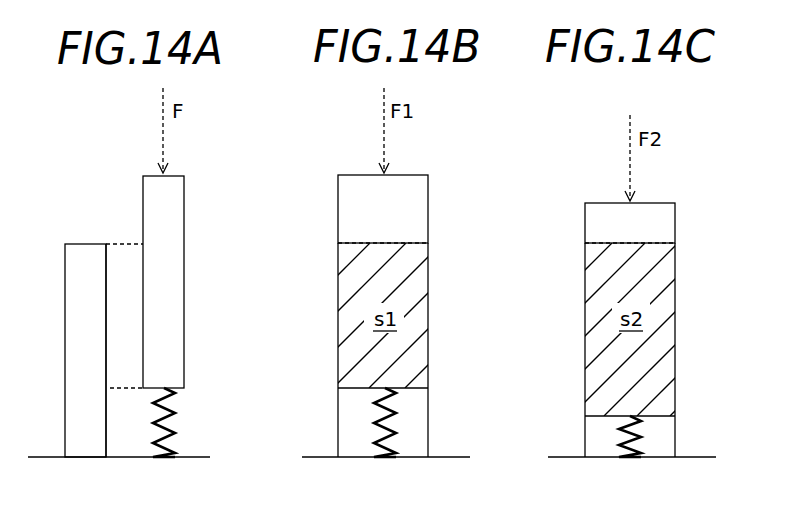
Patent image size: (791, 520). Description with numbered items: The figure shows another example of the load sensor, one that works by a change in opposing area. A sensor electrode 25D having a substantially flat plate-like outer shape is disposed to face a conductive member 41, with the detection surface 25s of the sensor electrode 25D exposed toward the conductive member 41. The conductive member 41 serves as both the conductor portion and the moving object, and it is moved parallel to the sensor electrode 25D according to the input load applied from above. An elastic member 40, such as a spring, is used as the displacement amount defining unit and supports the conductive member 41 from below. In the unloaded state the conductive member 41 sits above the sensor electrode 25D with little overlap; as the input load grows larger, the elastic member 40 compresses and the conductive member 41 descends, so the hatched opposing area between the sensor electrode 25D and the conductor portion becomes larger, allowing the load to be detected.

In FIG. 14A, the sensor electrode 25D is at (65, 244).
In FIG. 14B, the sensor electrode 25D is at (338, 420).
In FIG. 14C, the sensor electrode 25D is at (585, 432).
In FIG. 14A, the detection surface 25s is at (108, 296).
In FIG. 14B, the detection surface 25s is at (428, 409).
In FIG. 14C, the detection surface 25s is at (675, 425).
In FIG. 14A, the conductive member 41 is at (184, 176).
In FIG. 14B, the conductive member 41 is at (428, 175).
In FIG. 14C, the conductive member 41 is at (675, 203).
In FIG. 14A, the elastic member 40 is at (180, 436).
In FIG. 14B, the elastic member 40 is at (400, 436).
In FIG. 14C, the elastic member 40 is at (642, 438).